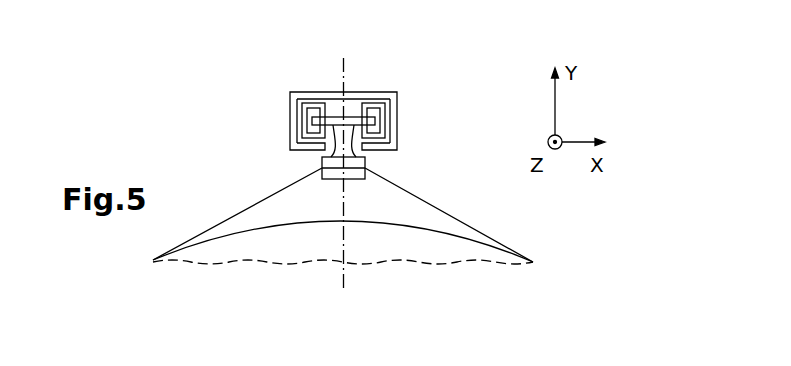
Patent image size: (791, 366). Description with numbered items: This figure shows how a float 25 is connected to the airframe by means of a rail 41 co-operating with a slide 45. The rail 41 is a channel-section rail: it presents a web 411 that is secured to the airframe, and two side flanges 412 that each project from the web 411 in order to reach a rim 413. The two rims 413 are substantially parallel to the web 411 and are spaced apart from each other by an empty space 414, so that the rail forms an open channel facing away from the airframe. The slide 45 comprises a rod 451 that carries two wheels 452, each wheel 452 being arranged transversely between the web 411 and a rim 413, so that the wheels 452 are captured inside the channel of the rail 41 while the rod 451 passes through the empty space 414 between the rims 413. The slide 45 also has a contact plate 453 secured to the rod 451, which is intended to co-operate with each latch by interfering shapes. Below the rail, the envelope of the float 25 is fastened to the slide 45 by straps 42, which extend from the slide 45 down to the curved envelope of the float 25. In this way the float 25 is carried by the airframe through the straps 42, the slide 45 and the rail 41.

The rail 41 is at (298, 62).
The web 411 is at (388, 91).
The side flanges 412 is at (397, 100).
The rims 413 is at (303, 150).
The empty space 414 is at (320, 122).
The slide 45 is at (333, 86).
The rod 451 is at (349, 116).
The wheels 452 is at (377, 113).
The contact plate 453 is at (362, 132).
The straps 42 is at (287, 193).
The float 25 is at (453, 233).